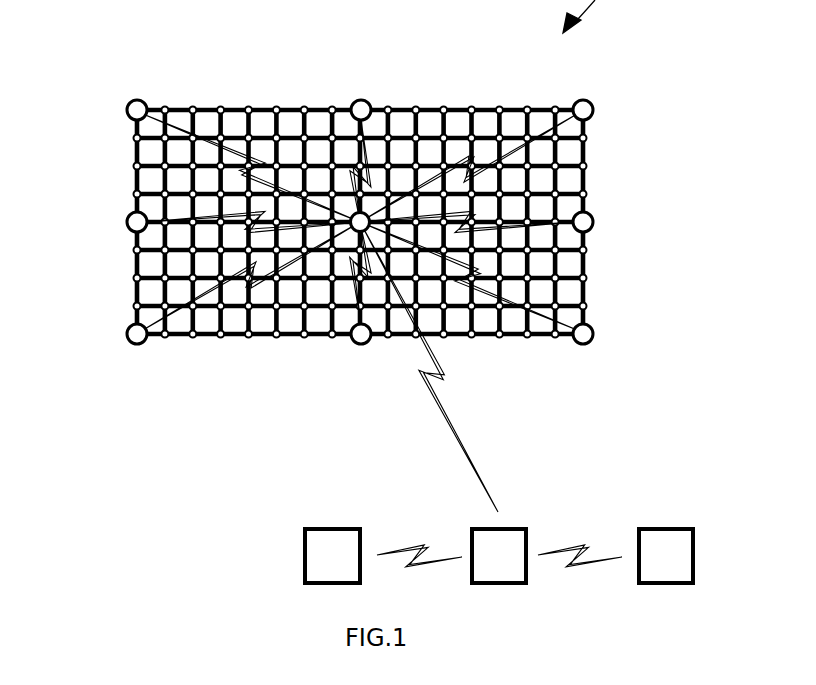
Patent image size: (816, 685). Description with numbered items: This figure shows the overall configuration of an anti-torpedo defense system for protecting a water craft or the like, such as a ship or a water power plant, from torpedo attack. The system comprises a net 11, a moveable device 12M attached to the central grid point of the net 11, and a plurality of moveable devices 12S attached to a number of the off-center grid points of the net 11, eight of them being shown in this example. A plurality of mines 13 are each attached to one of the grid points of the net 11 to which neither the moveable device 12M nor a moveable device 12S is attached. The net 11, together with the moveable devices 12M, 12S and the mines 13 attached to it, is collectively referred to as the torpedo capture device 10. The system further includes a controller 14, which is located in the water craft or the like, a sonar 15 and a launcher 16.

The torpedo capture device 10 is at (728, 83).
The net 11 is at (233, 108).
The moveable device 12S is at (127, 109).
The moveable device 12M is at (366, 212).
The mine 13 is at (223, 337).
The controller 14 is at (519, 527).
The sonar 15 is at (675, 527).
The launcher 16 is at (325, 527).